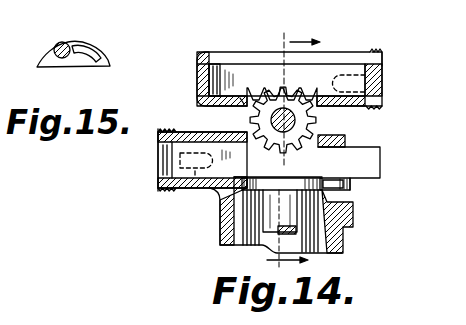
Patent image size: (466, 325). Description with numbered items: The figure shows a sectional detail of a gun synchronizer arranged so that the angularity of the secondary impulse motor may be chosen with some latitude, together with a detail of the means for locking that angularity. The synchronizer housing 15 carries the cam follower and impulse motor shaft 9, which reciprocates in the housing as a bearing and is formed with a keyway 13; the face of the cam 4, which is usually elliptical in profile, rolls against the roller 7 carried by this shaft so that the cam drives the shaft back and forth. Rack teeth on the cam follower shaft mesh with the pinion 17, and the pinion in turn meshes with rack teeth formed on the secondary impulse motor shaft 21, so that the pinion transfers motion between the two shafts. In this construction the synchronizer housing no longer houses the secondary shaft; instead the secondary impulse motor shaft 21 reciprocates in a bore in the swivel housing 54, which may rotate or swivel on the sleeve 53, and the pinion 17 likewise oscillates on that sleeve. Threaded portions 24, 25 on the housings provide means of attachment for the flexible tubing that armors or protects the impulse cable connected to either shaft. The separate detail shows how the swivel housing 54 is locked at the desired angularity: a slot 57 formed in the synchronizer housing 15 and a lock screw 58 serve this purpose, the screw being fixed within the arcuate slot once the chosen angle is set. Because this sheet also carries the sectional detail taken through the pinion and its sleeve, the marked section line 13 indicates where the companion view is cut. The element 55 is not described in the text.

In FIG. 14, the cam 4 is at (297, 224).
In FIG. 14, the roller 7 is at (340, 194).
In FIG. 14, the cam follower and impulse motor shaft 9 is at (184, 183).
In FIG. 14, the keyway 13 is at (304, 147).
In FIG. 15, the synchronizer housing 15 is at (88, 40).
In FIG. 14, the synchronizer housing 15 is at (343, 219).
In FIG. 14, the pinion 17 is at (297, 113).
In FIG. 14, the secondary impulse motor shaft 21 is at (258, 73).
In FIG. 14, the threaded portion 24 is at (377, 55).
In FIG. 14, the threaded portion 25 is at (163, 129).
In FIG. 14, the sleeve 53 is at (297, 123).
In FIG. 14, the swivel housing 54 is at (328, 55).
In FIG. 14, the rack teeth 55 is at (245, 102).
In FIG. 15, the slot 57 is at (98, 52).
In FIG. 15, the lock screw 58 is at (60, 42).